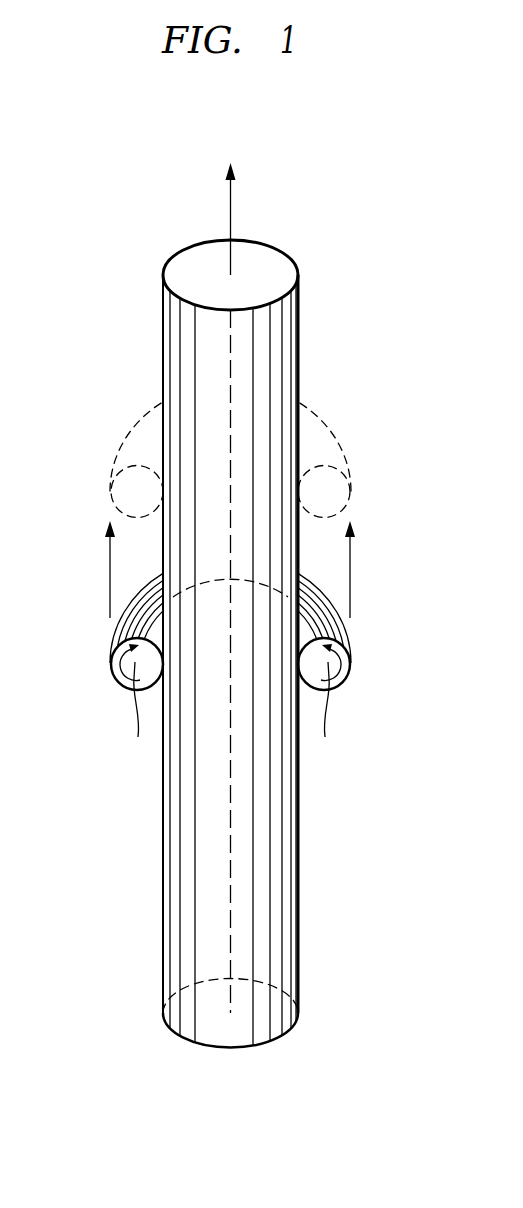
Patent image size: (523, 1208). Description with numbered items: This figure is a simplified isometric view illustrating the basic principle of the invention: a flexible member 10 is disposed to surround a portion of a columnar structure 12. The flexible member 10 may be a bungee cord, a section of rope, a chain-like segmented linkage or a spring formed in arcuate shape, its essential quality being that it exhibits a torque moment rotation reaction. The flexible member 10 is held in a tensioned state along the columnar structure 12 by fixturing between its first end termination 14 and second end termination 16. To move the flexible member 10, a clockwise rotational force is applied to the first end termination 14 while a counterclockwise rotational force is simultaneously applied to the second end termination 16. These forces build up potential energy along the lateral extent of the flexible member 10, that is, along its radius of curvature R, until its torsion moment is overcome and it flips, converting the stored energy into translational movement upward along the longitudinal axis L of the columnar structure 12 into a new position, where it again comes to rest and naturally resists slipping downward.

The flexible member 10 is at (127, 641).
The columnar structure 12 is at (283, 357).
The first end termination 14 is at (112, 675).
The second end termination 16 is at (343, 682).
The radius of curvature R is at (312, 622).
The longitudinal axis L is at (229, 200).